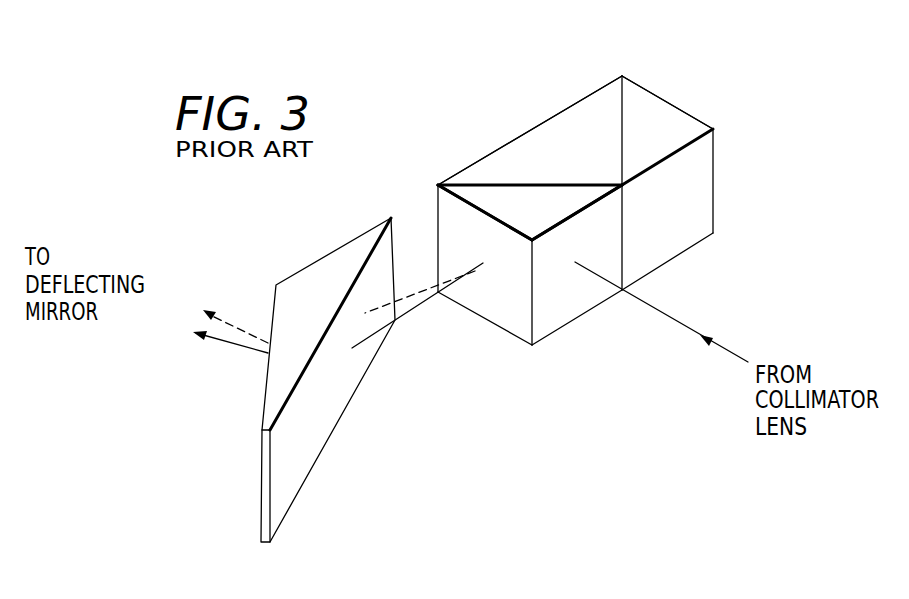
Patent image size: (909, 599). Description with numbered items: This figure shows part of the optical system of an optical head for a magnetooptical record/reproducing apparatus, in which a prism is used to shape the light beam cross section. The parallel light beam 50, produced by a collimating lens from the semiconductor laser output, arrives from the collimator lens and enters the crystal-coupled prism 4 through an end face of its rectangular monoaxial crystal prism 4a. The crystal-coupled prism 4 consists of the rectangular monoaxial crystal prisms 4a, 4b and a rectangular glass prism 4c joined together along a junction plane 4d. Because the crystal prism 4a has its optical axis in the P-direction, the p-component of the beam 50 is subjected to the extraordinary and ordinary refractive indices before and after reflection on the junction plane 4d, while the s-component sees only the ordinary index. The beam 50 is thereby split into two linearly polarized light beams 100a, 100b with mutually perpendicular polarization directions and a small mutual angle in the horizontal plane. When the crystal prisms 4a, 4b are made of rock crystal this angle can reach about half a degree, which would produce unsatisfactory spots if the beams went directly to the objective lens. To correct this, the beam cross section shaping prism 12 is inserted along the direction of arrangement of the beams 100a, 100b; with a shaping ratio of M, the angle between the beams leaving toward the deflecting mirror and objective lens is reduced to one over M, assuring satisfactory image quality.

The crystal-coupled prism 4 is at (415, 147).
The rectangular monoaxial crystal prism 4a is at (465, 195).
The rectangular monoaxial crystal prism 4b is at (528, 143).
The rectangular glass prism 4c is at (630, 105).
The junction plane 4d is at (580, 182).
The beam cross section shaping prism 12 is at (323, 263).
The parallel light beam 50 is at (668, 320).
The linearly polarized light beam 100a is at (210, 330).
The linearly polarized light beam 100b is at (220, 313).